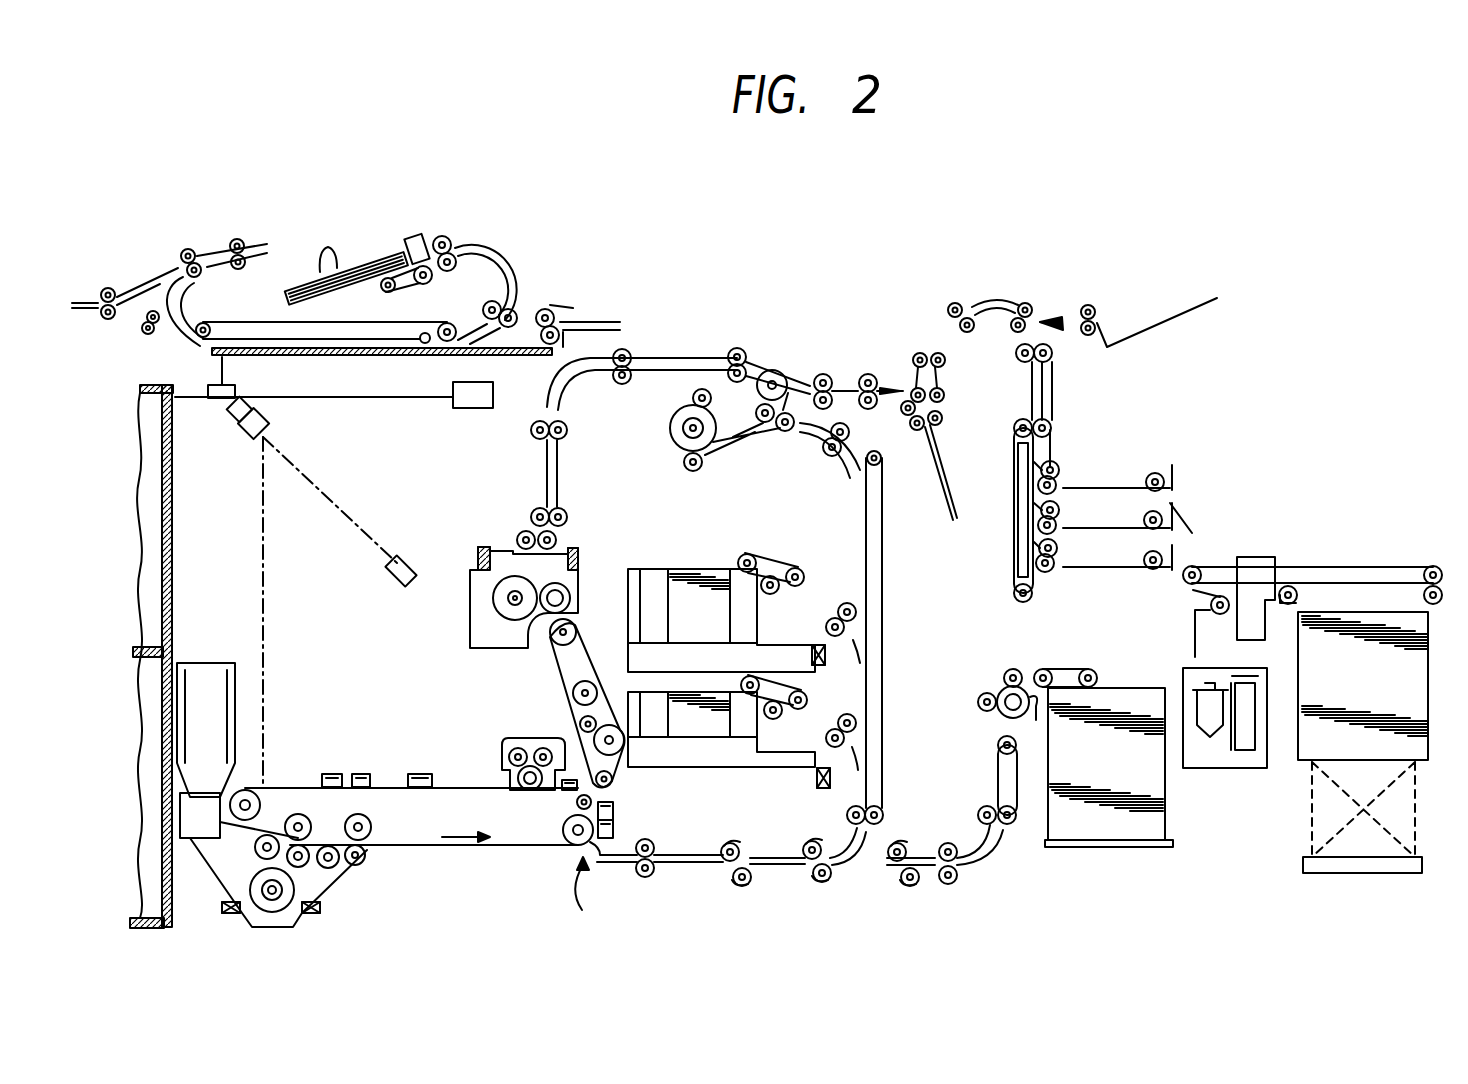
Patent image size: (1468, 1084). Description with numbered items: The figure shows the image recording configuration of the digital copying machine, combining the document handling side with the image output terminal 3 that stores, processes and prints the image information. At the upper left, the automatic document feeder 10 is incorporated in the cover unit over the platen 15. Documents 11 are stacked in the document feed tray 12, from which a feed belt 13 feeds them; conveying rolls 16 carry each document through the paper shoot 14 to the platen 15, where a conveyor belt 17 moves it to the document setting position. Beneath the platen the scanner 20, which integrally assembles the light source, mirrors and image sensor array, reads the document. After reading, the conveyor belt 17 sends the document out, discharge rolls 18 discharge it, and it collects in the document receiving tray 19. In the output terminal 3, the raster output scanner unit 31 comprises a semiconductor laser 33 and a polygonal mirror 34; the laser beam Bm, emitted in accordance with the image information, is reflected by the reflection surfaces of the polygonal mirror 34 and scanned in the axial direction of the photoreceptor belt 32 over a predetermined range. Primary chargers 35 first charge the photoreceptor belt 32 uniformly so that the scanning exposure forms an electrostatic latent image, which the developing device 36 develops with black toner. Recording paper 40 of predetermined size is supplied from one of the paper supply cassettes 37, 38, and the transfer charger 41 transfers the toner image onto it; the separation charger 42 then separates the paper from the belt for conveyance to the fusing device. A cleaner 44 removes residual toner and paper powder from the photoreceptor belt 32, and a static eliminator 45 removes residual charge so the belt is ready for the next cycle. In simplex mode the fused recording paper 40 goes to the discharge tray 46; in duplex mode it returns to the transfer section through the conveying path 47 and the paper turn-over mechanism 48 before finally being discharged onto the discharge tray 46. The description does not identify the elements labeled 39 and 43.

The image output terminal 3 is at (740, 265).
The automatic document feeder 10 is at (363, 243).
The documents 11 is at (323, 250).
The document feed tray 12 is at (307, 302).
The feed belt 13 is at (430, 277).
The paper shoot 14 is at (493, 262).
The platen 15 is at (374, 357).
The conveying rolls 16 is at (455, 257).
The conveyor belt 17 is at (402, 322).
The discharge rolls 18 is at (232, 242).
The document receiving tray 19 is at (94, 325).
The scanner 20 is at (235, 389).
The raster output scanner unit 31 is at (336, 464).
The photoreceptor belt 32 is at (450, 788).
The semiconductor laser 33 is at (407, 558).
The polygonal mirror 34 is at (268, 420).
The primary chargers 35 is at (360, 772).
The developing device 36 is at (347, 870).
The paper supply cassette 37 is at (720, 770).
The paper supply cassette 38 is at (713, 568).
The stacking container 39 is at (1123, 848).
The recording paper 40 is at (683, 577).
The transfer charger 41 is at (614, 828).
The separation charger 42 is at (614, 808).
The cutting unit 43 is at (592, 566).
The cleaner 44 is at (523, 736).
The static eliminator 45 is at (420, 770).
The discharge tray 46 is at (1195, 317).
The conveying path 47 is at (681, 357).
The paper turn-over mechanism 48 is at (848, 372).
The laser beam Bm is at (347, 503).